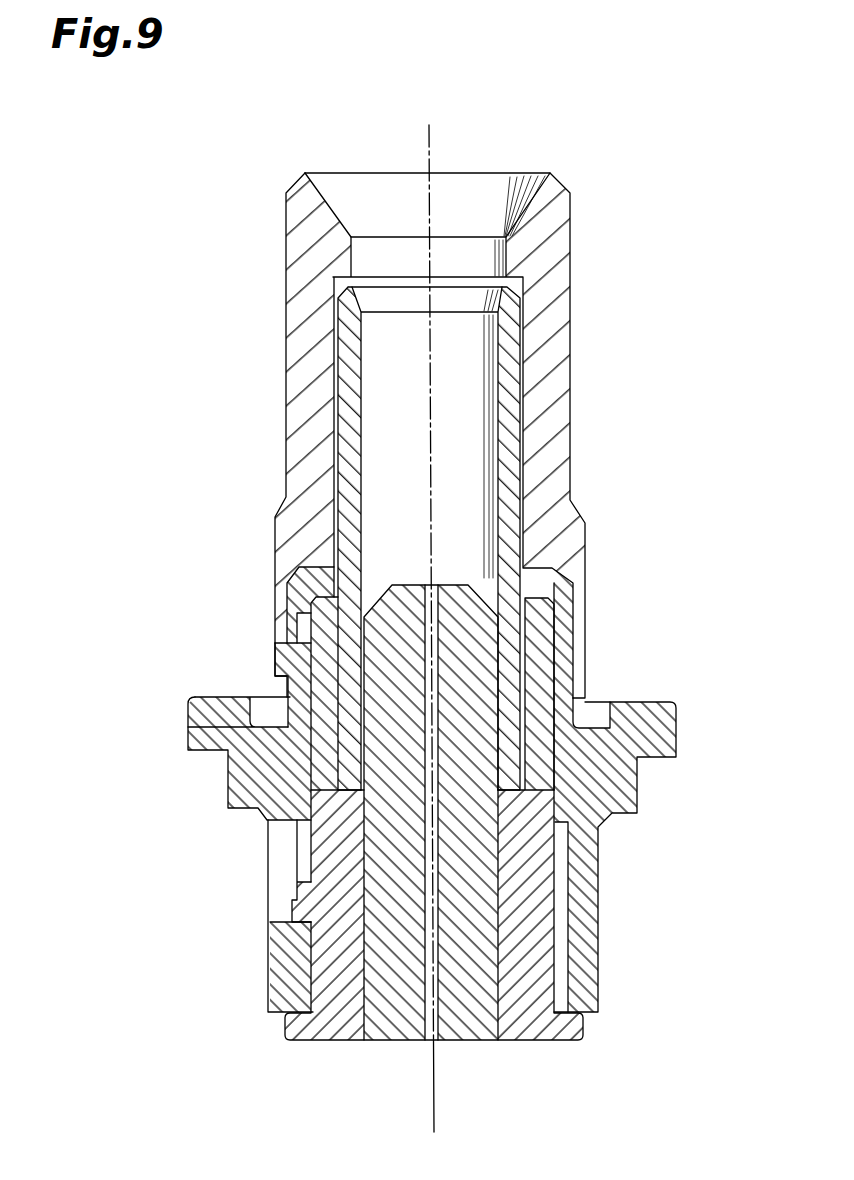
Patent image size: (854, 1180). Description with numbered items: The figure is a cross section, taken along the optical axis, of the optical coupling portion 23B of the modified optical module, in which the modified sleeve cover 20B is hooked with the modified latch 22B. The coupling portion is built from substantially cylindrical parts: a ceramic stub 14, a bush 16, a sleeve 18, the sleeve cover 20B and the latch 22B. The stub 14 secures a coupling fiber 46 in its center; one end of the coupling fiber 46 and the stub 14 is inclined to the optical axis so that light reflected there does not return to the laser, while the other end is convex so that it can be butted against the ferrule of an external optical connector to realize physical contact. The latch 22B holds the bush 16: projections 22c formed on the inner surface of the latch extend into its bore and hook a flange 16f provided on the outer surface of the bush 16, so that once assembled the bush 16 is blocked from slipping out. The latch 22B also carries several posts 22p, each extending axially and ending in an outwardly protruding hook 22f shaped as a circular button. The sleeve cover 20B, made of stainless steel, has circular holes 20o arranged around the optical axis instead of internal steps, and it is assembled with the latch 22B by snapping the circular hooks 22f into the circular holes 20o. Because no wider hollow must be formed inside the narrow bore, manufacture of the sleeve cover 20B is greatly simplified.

The coupling portion 23B is at (635, 149).
The sleeve cover 20B is at (550, 286).
The sleeve 18 is at (512, 426).
The bush 16 is at (543, 647).
The stub 14 is at (397, 1017).
The latch 22B is at (560, 677).
The hook 22f is at (288, 660).
The hole 20o is at (268, 660).
The post 22p is at (300, 697).
The flange 16f is at (308, 910).
The projection 22c is at (282, 982).
The coupling fiber 46 is at (440, 862).